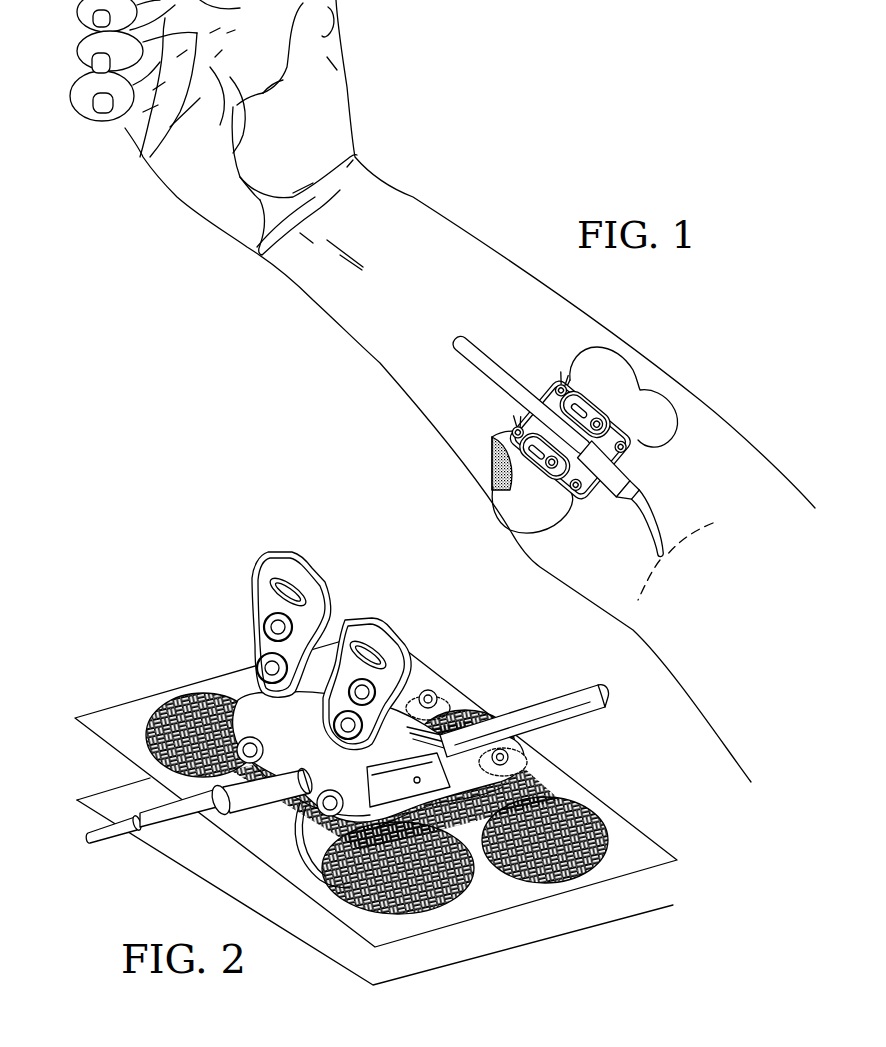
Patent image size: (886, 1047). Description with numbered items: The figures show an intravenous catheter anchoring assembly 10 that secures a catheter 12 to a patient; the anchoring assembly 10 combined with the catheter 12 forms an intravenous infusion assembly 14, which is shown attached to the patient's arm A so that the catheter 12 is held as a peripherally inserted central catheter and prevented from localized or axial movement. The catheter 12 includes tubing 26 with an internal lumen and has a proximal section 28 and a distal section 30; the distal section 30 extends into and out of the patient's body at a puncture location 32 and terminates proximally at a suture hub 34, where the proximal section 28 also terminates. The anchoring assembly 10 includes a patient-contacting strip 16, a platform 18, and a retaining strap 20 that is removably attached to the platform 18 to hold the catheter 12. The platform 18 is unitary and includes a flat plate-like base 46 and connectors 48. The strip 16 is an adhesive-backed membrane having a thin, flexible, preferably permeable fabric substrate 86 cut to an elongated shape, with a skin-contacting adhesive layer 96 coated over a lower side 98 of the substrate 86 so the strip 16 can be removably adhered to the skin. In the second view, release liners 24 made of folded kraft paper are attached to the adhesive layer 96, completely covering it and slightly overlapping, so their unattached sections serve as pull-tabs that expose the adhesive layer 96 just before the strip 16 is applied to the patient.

In FIG. 1, the intravenous catheter anchoring assembly 10 is at (596, 128).
In FIG. 1, the patient's arm A is at (410, 227).
In FIG. 1, the catheter 12 is at (560, 430).
In FIG. 2, the catheter 12 is at (537, 703).
In FIG. 1, the intravenous infusion assembly 14 is at (658, 318).
In FIG. 1, the patient-contacting strip 16 is at (554, 433).
In FIG. 2, the patient-contacting strip 16 is at (405, 803).
In FIG. 1, the platform 18 is at (586, 419).
In FIG. 1, the retaining strap 20 is at (550, 413).
In FIG. 2, the retaining strap 20 is at (257, 687).
In FIG. 2, the release liners 24 is at (122, 715).
In FIG. 2, the tubing 26 is at (533, 710).
In FIG. 2, the proximal section 28 is at (588, 707).
In FIG. 1, the distal section 30 is at (626, 499).
In FIG. 2, the distal section 30 is at (200, 827).
In FIG. 1, the puncture location 32 is at (673, 552).
In FIG. 2, the suture hub 34 is at (247, 803).
In FIG. 2, the base 46 is at (290, 813).
In FIG. 2, the connectors 48 is at (277, 813).
In FIG. 1, the substrate 86 is at (512, 510).
In FIG. 2, the substrate 86 is at (590, 820).
In FIG. 1, the skin-contacting adhesive layer 96 is at (487, 453).
In FIG. 1, the lower side 98 is at (490, 480).